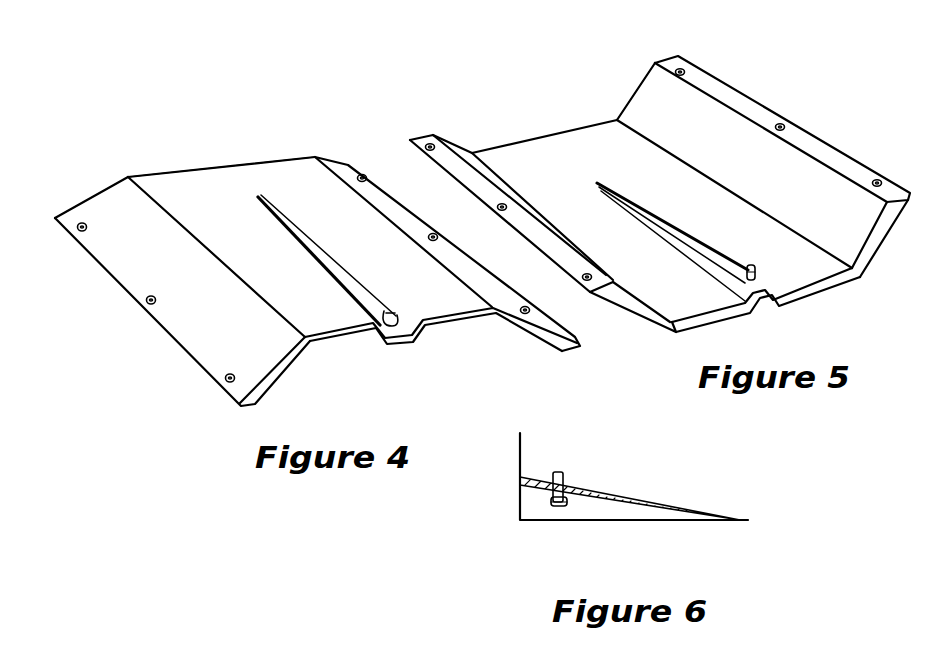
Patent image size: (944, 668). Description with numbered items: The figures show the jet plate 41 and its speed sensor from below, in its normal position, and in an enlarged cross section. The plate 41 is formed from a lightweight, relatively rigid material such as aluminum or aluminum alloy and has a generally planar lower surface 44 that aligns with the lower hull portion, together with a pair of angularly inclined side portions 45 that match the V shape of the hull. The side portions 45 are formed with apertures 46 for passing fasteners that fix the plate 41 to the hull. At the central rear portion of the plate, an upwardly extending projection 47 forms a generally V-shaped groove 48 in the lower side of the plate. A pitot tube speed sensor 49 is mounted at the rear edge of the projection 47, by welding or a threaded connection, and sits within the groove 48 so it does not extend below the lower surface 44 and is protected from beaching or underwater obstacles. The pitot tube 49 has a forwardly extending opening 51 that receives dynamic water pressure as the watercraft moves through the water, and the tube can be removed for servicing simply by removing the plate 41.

In FIG. 4, the plate 41 is at (170, 340).
In FIG. 5, the plate 41 is at (885, 268).
In FIG. 4, the lower surface 44 is at (207, 183).
In FIG. 5, the lower surface 44 is at (793, 270).
In FIG. 6, the lower surface 44 is at (710, 522).
In FIG. 4, the side portions 45 is at (347, 166).
In FIG. 5, the side portions 45 is at (467, 153).
In FIG. 4, the apertures 46 is at (76, 228).
In FIG. 5, the apertures 46 is at (436, 150).
In FIG. 5, the projection 47 is at (697, 242).
In FIG. 6, the projection 47 is at (630, 492).
In FIG. 4, the groove 48 is at (351, 266).
In FIG. 6, the groove 48 is at (565, 477).
In FIG. 4, the pitot tube speed sensor 49 is at (420, 312).
In FIG. 5, the pitot tube speed sensor 49 is at (752, 263).
In FIG. 4, the forwardly extending opening 51 is at (365, 303).
In FIG. 6, the forwardly extending opening 51 is at (568, 498).